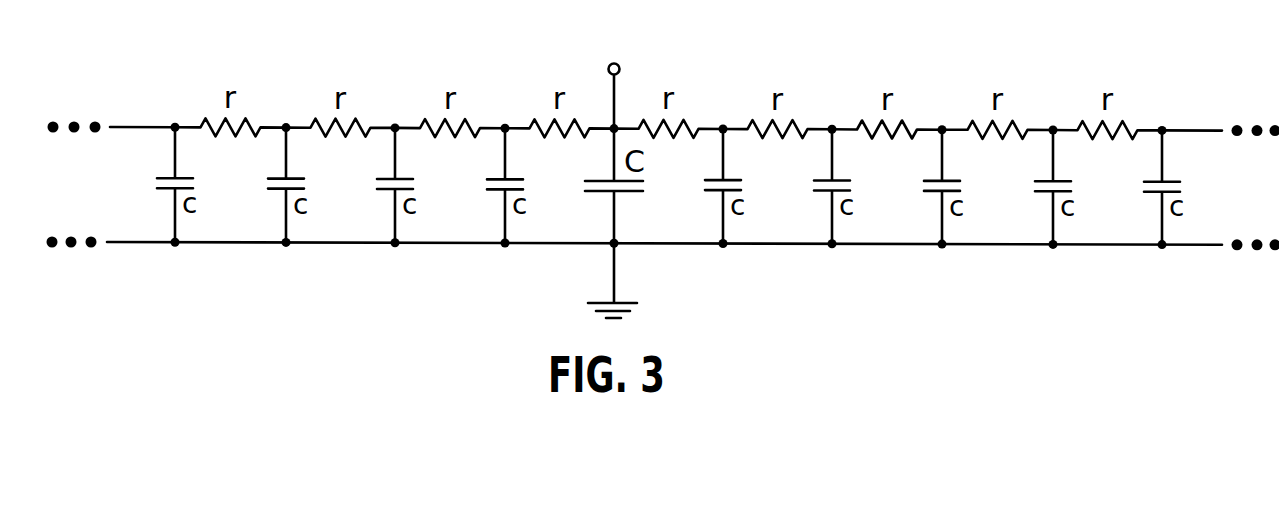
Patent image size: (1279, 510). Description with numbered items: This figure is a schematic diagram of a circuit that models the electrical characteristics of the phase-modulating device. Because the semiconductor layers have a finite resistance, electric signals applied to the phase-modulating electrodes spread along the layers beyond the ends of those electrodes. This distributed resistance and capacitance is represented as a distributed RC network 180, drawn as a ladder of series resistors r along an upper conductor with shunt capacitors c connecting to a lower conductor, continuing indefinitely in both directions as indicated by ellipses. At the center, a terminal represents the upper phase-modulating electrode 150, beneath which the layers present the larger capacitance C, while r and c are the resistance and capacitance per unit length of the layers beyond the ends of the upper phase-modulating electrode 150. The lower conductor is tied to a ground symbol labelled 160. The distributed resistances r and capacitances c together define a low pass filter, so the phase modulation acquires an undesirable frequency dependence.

The upper phase-modulating electrode 150 is at (618, 89).
The ground connection 160 is at (613, 271).
The distributed RC network 180 is at (577, 74).